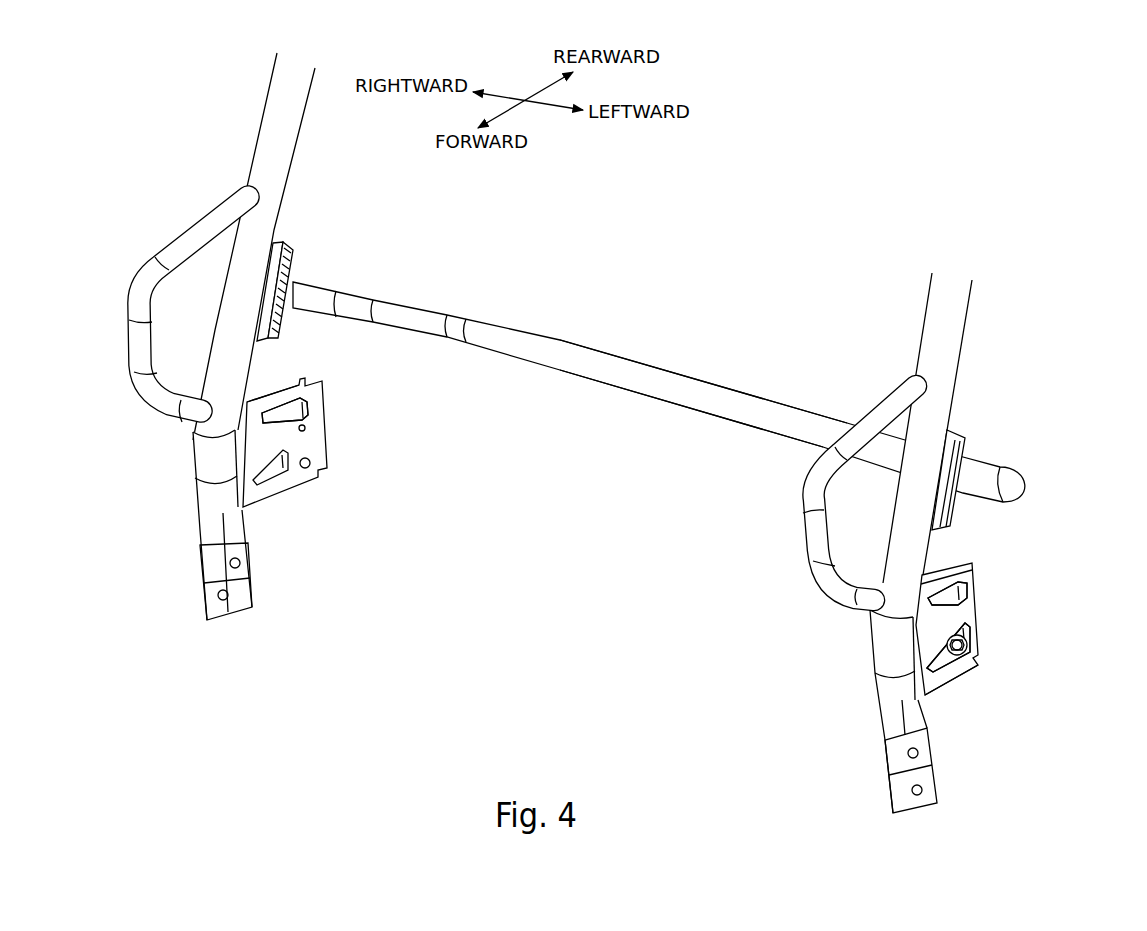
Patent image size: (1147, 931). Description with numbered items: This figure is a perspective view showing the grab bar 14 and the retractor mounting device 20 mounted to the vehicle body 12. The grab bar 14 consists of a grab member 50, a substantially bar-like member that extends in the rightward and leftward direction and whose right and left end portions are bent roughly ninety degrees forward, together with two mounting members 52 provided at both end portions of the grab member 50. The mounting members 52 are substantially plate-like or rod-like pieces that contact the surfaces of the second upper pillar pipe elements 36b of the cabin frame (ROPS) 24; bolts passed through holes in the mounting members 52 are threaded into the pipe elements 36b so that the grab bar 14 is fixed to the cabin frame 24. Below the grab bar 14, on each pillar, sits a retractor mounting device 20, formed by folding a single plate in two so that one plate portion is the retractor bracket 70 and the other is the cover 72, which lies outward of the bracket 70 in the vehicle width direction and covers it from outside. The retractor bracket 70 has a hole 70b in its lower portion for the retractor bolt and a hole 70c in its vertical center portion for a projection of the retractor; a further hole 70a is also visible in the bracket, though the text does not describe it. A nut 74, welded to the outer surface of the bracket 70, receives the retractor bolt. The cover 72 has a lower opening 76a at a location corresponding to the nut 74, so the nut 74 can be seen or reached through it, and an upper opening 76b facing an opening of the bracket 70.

The frame 12 is at (244, 154).
The grab bar 14 is at (626, 357).
The retractor mounting device 20 is at (329, 428).
The cabin frame (ROPS) 24 is at (256, 106).
The second upper pillar pipe element 36b is at (932, 302).
The grab member 50 is at (707, 397).
The mounting member 52 is at (281, 250).
The retractor bracket 70 is at (320, 440).
The hole 70a is at (313, 452).
The hole 70b is at (305, 470).
The hole 70c is at (320, 410).
The cover 72 is at (263, 385).
The nut 74 is at (970, 642).
The opening 76a is at (975, 625).
The opening 76b is at (978, 570).